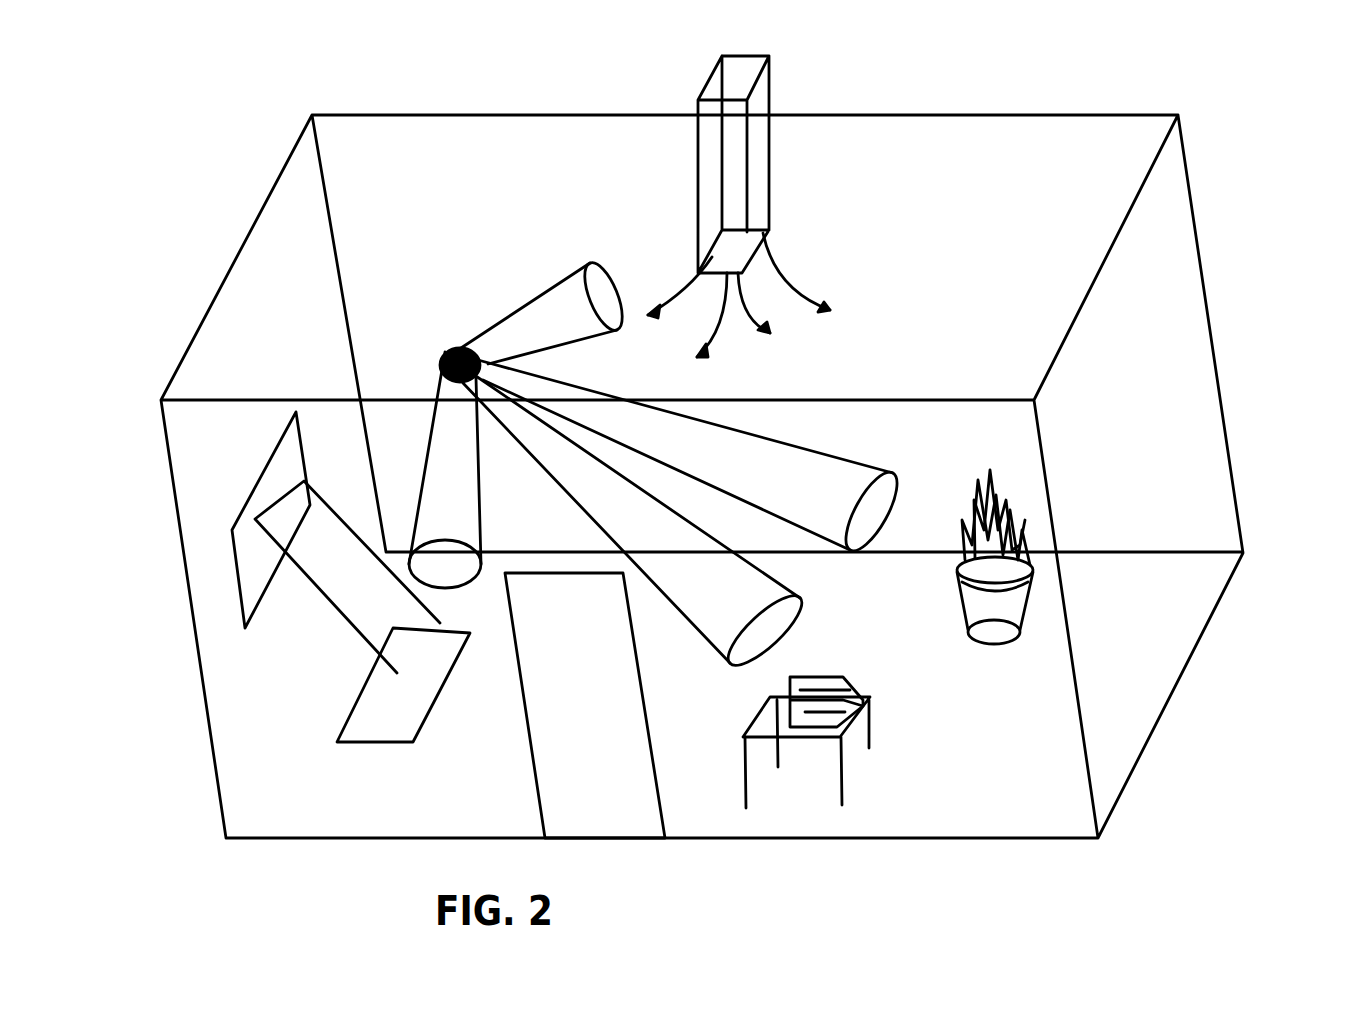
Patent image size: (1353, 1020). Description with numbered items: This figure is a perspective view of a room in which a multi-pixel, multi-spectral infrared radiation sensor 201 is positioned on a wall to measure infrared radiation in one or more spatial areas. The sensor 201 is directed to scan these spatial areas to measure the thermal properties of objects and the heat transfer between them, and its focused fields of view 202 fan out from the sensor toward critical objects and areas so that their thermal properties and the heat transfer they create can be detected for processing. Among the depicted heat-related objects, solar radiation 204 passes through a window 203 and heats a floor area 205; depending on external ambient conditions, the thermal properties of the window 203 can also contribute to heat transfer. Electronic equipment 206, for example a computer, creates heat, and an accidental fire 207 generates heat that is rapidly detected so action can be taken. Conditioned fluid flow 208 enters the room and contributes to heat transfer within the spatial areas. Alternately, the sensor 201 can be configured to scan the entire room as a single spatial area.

The multi-pixel, multi-spectral infrared radiation sensor 201 is at (453, 350).
The focused fields of view 202 is at (533, 290).
The window 203 is at (213, 551).
The solar radiation 204 is at (283, 660).
The floor area 205 is at (400, 757).
The electronic equipment 206 is at (852, 737).
The accidental fire 207 is at (1040, 572).
The conditioned fluid flow 208 is at (792, 258).